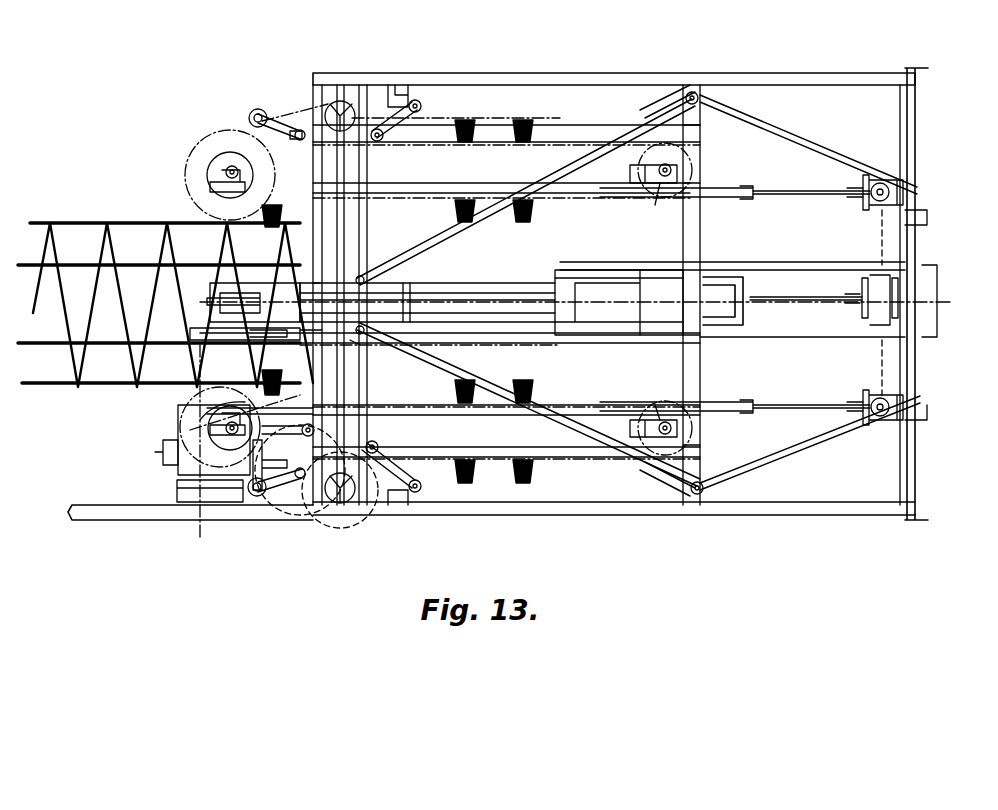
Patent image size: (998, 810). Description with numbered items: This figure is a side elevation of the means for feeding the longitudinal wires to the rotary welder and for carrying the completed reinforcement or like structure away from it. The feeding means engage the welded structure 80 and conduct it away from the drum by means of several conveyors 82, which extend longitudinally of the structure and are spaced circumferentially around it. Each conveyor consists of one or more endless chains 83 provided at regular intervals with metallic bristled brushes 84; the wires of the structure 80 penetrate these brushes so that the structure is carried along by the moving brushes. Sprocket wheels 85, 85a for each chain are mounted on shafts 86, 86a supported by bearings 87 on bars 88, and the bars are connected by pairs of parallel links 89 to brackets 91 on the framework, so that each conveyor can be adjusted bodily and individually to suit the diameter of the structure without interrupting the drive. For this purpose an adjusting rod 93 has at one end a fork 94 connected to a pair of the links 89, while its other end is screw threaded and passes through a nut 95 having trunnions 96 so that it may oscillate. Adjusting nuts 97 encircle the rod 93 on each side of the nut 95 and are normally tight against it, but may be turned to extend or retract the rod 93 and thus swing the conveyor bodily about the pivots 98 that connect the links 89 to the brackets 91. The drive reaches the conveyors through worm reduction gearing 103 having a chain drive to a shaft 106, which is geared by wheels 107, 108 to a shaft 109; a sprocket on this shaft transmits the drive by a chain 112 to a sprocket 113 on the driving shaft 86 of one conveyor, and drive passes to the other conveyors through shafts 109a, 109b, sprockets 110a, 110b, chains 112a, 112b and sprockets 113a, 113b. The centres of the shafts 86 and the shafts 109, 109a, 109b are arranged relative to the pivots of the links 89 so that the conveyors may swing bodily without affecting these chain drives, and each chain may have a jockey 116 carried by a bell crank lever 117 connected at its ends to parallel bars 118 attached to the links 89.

The welded structure 80 is at (122, 215).
The conveyor 82 is at (491, 288).
The endless chain 83 is at (556, 72).
The metallic bristled brush 84 is at (455, 216).
The sprocket wheel 85 is at (207, 168).
The sprocket wheel 85a is at (685, 160).
The shaft 86 is at (224, 174).
The shaft 86a is at (680, 172).
The bearing 87 is at (225, 190).
The bar 88 is at (428, 176).
The parallel link 89 is at (392, 95).
The bracket 91 is at (420, 88).
The adjusting rod 93 is at (810, 198).
The fork 94 is at (740, 198).
The oscillatory nut 95 is at (910, 160).
The trunnion 96 is at (876, 205).
The adjusting nut 97 is at (868, 175).
The pivot 98 is at (705, 92).
The worm reduction gearing 103 is at (176, 433).
The shaft 106 is at (258, 495).
The wheel 107 is at (165, 462).
The wheel 108 is at (365, 505).
The shaft 109 is at (345, 505).
The shaft 109a is at (346, 388).
The shaft 109b is at (342, 100).
The sprocket 110a is at (355, 345).
The sprocket 110b is at (345, 102).
The chain 112 is at (282, 420).
The chain 112a is at (210, 328).
The chain 112b is at (292, 110).
The sprocket 113 is at (200, 520).
The sprocket 113a is at (205, 340).
The sprocket 113b is at (200, 150).
The jockey 116 is at (256, 110).
The bell crank lever 117 is at (270, 125).
The parallel bar 118 is at (485, 138).